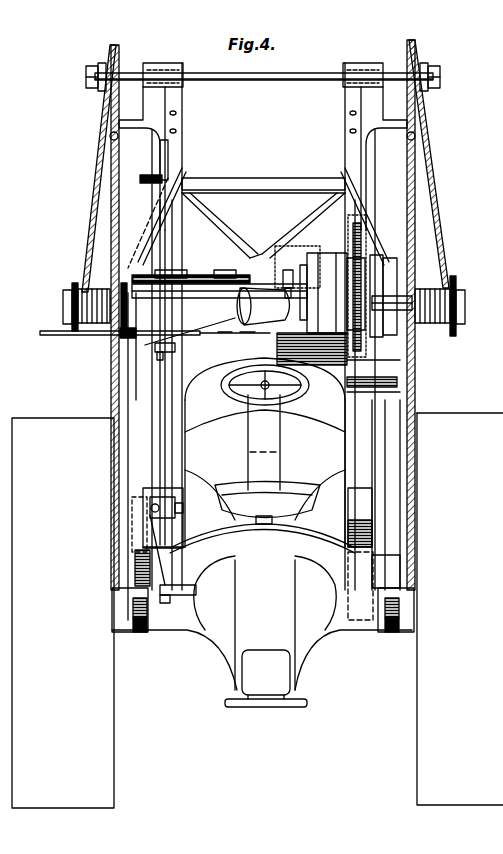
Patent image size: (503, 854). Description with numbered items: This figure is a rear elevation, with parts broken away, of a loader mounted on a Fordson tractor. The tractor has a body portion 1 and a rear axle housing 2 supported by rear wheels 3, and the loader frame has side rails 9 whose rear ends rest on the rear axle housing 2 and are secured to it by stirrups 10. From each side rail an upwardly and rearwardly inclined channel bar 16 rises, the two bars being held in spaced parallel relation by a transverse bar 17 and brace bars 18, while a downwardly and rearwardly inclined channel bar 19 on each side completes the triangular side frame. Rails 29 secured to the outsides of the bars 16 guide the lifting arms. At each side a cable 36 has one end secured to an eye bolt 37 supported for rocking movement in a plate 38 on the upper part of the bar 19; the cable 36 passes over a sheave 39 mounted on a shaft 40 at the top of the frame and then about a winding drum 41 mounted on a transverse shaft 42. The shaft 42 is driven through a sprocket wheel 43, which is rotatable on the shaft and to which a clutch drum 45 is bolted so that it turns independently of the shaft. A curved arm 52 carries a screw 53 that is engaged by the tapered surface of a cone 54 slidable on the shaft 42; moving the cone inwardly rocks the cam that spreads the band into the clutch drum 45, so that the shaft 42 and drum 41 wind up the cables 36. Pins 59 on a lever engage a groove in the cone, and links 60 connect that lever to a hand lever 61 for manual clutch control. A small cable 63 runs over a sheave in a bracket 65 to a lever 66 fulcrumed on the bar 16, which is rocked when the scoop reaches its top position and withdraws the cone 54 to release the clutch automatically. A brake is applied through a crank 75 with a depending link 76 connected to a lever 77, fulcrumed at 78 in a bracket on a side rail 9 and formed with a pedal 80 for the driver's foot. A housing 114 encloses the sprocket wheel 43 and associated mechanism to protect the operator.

The body portion 1 is at (265, 452).
The rear axle housing 2 is at (183, 628).
The rear wheels 3 is at (105, 747).
The side rails 9 is at (146, 570).
The stirrups 10 is at (140, 636).
The inclined channel bar 16 is at (176, 245).
The transverse bar 17 is at (249, 190).
The brace bars 18 is at (234, 237).
The inclined channel bar 19 is at (172, 212).
The rails 29 is at (152, 200).
The cable 36 is at (96, 172).
The eye bolt 37 is at (115, 137).
The plate 38 is at (152, 104).
The sheave 39 is at (112, 56).
The shaft 40 is at (270, 81).
The winding drum 41 is at (64, 300).
The shaft 42 is at (118, 338).
The sprocket wheel 43 is at (385, 256).
The clutch drum 45 is at (326, 366).
The curved arm 52 is at (313, 258).
The screw 53 is at (289, 270).
The cone 54 is at (268, 328).
The pins 59 is at (242, 335).
The links 60 is at (210, 336).
The hand lever 61 is at (46, 336).
The small cable 63 is at (214, 282).
The bracket 65 is at (132, 278).
The lever 66 is at (170, 154).
The crank 75 is at (160, 347).
The depending link 76 is at (168, 460).
The lever 77 is at (176, 503).
The fulcrum 78 is at (150, 508).
The pedal 80 is at (192, 596).
The housing 114 is at (358, 361).